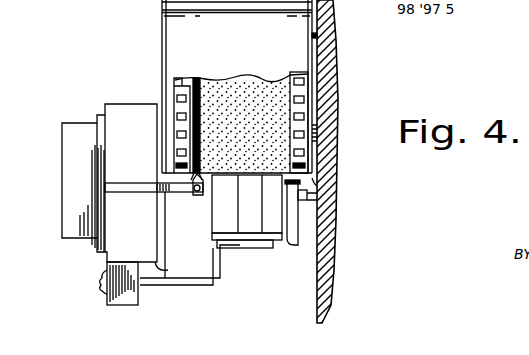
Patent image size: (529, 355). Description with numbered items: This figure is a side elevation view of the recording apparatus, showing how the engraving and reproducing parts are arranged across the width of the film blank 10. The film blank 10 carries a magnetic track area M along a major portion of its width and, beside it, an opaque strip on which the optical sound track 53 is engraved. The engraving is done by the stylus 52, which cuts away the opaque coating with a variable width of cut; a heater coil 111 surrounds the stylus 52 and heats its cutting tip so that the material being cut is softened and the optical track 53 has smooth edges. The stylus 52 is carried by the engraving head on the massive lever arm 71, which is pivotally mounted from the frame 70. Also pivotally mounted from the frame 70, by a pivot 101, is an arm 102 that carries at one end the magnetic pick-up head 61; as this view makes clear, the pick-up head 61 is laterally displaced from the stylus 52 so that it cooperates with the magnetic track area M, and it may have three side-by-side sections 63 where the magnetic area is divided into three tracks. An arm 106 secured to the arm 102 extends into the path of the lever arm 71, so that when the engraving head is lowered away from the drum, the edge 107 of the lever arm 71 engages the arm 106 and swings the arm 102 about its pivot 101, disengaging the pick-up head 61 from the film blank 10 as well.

The film blank 10 is at (307, 84).
The magnetic track area M is at (278, 113).
The optical sound track 53 is at (175, 84).
The stylus 52 is at (199, 196).
The heater coil 111 is at (157, 213).
The lever arm 71 is at (107, 258).
The edge of lever arm 107 is at (162, 271).
The arm 106 is at (201, 285).
The side-by-side sections 63 is at (270, 220).
The arm 102 is at (297, 247).
The pivot 101 is at (315, 187).
The magnetic pick-up head 61 is at (283, 216).
The frame 70 is at (330, 268).